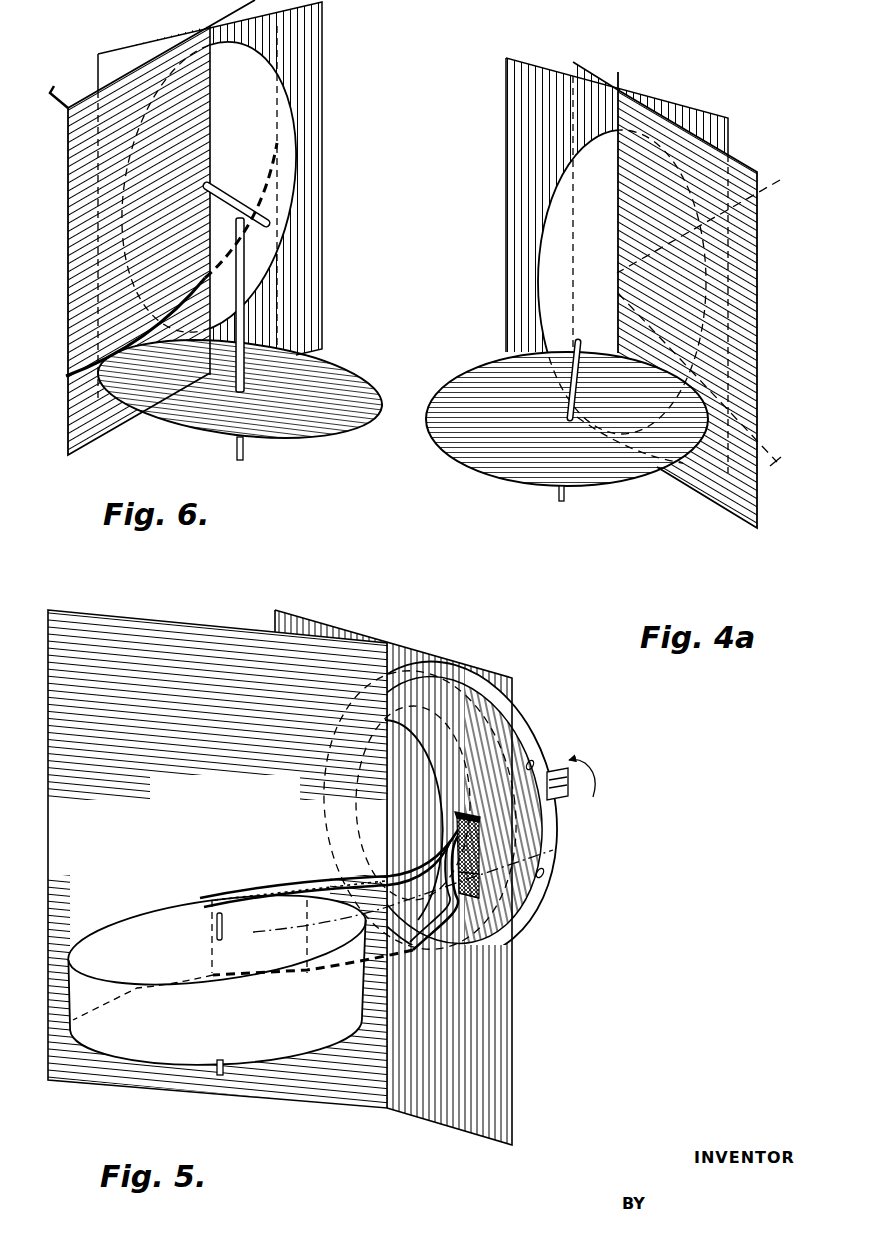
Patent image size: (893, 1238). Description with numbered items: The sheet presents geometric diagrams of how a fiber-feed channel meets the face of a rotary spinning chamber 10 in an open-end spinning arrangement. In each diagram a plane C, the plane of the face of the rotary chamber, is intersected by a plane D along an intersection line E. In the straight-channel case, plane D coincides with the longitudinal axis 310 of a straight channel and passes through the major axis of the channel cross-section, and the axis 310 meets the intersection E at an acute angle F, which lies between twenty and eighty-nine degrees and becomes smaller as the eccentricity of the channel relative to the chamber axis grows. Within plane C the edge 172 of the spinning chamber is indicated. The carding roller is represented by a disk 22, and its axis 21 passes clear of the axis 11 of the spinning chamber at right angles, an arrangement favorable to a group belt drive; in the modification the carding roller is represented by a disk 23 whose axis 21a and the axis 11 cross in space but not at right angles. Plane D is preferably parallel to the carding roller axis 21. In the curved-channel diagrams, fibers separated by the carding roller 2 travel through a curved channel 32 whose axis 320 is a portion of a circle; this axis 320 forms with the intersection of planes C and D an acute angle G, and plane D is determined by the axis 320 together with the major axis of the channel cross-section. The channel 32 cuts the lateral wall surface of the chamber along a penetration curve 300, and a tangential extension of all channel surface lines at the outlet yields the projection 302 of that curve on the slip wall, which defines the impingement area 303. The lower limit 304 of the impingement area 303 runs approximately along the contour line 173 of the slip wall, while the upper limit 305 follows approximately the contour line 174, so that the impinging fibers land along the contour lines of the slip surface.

In FIG. 5, the carding roller 2 is at (80, 954).
In FIG. 5, the spinning chamber 10 is at (519, 736).
In FIG. 6, the axis of the spinning chamber 11 is at (62, 88).
In FIG. 4A, the axis of the spinning chamber 11 is at (703, 213).
In FIG. 6, the axis of the carding roller 21 is at (243, 272).
In FIG. 5, the axis of the carding roller 21 is at (224, 932).
In FIG. 4A, the axis of the disk 21a is at (576, 345).
In FIG. 6, the disk 22 is at (346, 382).
In FIG. 4A, the disk 23 is at (450, 393).
In FIG. 5, the curved channel 32 is at (303, 885).
In FIG. 6, the edge of the spinning chamber 172 is at (293, 182).
In FIG. 4A, the edge of the spinning chamber 172 is at (538, 243).
In FIG. 5, the contour line 173 is at (422, 706).
In FIG. 5, the contour line 174 is at (409, 646).
In FIG. 5, the penetration curve 300 is at (478, 829).
In FIG. 5, the projection of the penetration curve 302 is at (474, 817).
In FIG. 5, the impingement area 303 is at (474, 895).
In FIG. 5, the lower limit of the impingement area 304 is at (490, 853).
In FIG. 5, the upper limit of the impingement area 305 is at (478, 873).
In FIG. 4A, the longitudinal axis of the straight channel 310 is at (775, 460).
In FIG. 6, the axis of the channel 320 is at (96, 360).
In FIG. 5, the axis of the channel 320 is at (291, 929).
In FIG. 6, the plane of the face of the rotary chamber C is at (323, 66).
In FIG. 4A, the plane of the face of the rotary chamber C is at (729, 141).
In FIG. 5, the plane of the face of the rotary chamber C is at (500, 1057).
In FIG. 6, the plane D is at (68, 212).
In FIG. 4A, the plane D is at (758, 247).
In FIG. 5, the plane D is at (57, 818).
In FIG. 6, the intersection of the planes C and D E is at (208, 28).
In FIG. 4A, the intersection of the planes C and D E is at (621, 88).
In FIG. 5, the intersection of the planes C and D E is at (390, 1100).
In FIG. 4A, the angle F is at (620, 341).
In FIG. 6, the angle G is at (184, 310).
In FIG. 5, the angle G is at (382, 928).